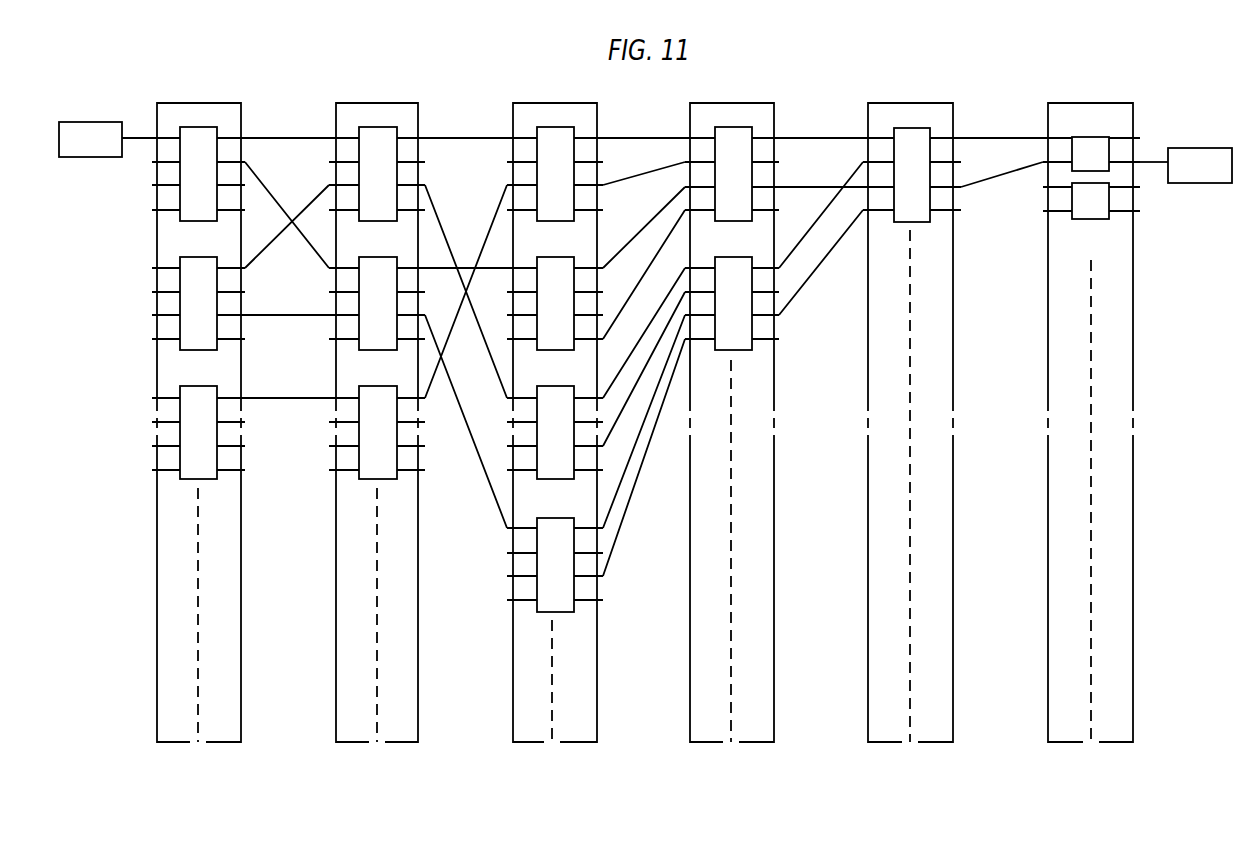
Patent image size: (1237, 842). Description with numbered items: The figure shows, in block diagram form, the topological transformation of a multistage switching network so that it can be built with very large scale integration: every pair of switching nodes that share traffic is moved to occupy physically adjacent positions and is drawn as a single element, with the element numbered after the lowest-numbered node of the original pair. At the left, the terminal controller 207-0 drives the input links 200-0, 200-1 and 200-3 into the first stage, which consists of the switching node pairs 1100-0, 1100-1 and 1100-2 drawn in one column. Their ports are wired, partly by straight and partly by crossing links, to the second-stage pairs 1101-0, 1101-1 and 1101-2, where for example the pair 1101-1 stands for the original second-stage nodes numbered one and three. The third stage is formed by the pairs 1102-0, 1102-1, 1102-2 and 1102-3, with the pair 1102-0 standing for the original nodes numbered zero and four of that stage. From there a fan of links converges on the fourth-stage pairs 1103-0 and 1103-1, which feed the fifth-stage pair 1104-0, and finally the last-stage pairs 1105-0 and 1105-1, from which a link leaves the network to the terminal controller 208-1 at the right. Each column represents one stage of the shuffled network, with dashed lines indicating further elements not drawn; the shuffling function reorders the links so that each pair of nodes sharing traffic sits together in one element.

The terminal controller 207-0 is at (122, 122).
The terminal controller 208-1 is at (1232, 148).
The link 200-0 is at (134, 141).
The link 200-1 is at (153, 162).
The link 200-3 is at (152, 208).
The switching node pair 1100-0 is at (224, 112).
The switching node pair 1100-1 is at (224, 240).
The switching node pair 1100-2 is at (224, 367).
The switching node pair 1101-0 is at (403, 112).
The switching node pair 1101-1 is at (403, 240).
The switching node pair 1101-2 is at (403, 367).
The switching node pair 1102-0 is at (581, 112).
The switching node pair 1102-1 is at (581, 240).
The switching node pair 1102-2 is at (581, 367).
The switching node pair 1102-3 is at (581, 499).
The switching node pair 1103-0 is at (759, 112).
The switching node pair 1103-1 is at (759, 240).
The switching node pair 1104-0 is at (938, 112).
The switching node pair 1105-0 is at (1116, 114).
The switching node pair 1105-1 is at (1109, 219).